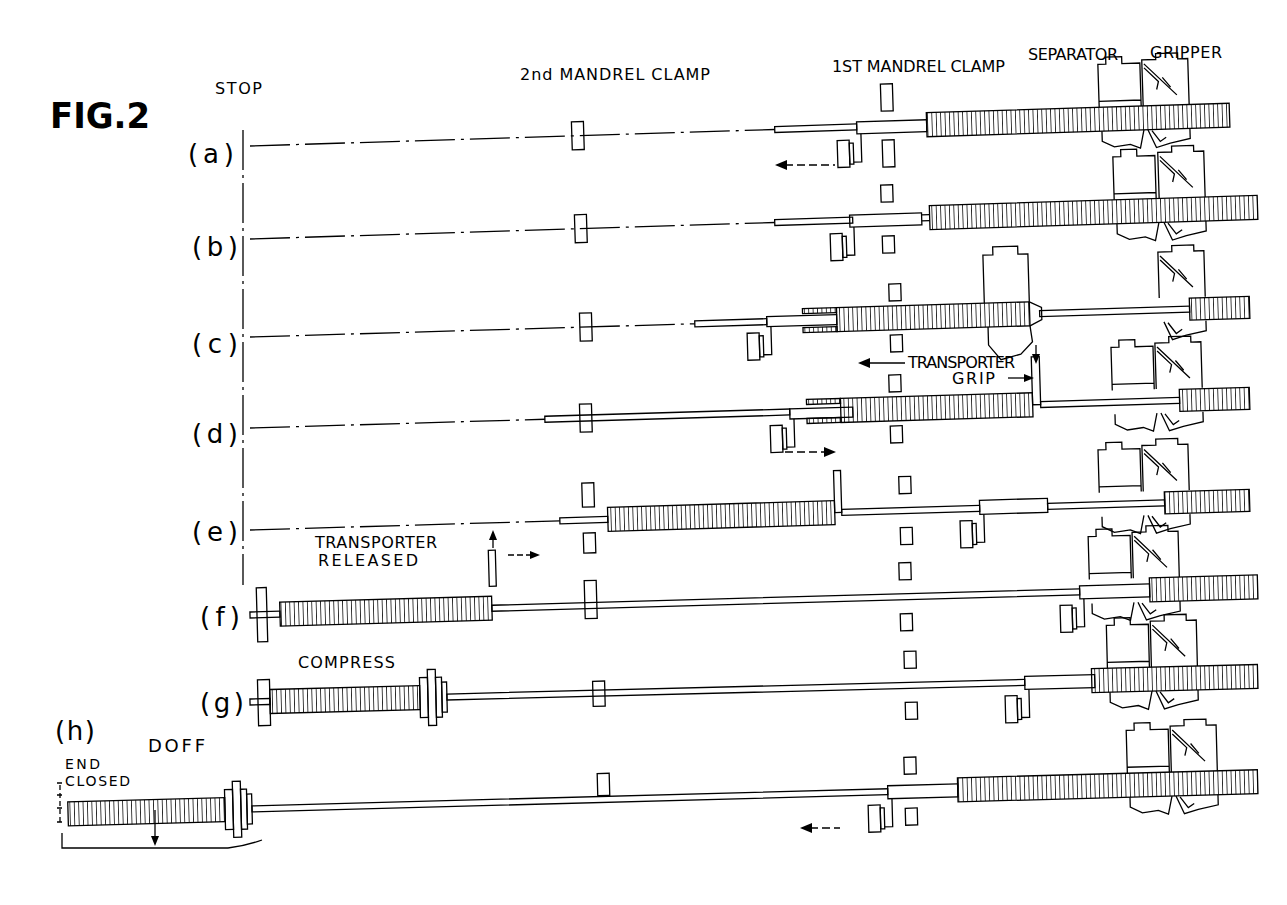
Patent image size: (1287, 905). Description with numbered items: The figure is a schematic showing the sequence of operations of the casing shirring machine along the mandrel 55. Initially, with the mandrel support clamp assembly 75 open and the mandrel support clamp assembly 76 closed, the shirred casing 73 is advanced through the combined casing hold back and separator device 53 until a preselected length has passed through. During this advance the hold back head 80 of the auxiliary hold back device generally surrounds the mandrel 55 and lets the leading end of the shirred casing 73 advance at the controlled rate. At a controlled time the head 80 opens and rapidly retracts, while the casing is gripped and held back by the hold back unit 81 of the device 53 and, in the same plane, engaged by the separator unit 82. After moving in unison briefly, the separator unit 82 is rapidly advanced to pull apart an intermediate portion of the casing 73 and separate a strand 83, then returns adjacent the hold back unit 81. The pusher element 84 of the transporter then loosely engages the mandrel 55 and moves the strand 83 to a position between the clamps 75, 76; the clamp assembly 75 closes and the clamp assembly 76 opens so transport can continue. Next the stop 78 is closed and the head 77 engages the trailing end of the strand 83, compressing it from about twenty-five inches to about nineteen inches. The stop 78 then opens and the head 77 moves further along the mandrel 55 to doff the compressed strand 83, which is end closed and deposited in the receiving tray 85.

The combined casing hold back and separator device 53 is at (1106, 72).
The mandrel 55 is at (784, 117).
The shirred casing 73 is at (1046, 128).
The mandrel support clamp assembly 75 is at (898, 104).
The mandrel support clamp assembly 76 is at (586, 118).
The head 77 is at (434, 728).
The stop 78 is at (276, 722).
The hold back head 80 is at (860, 113).
The hold back unit 81 is at (1202, 192).
The separator unit 82 is at (1114, 173).
The strand 83 is at (918, 300).
The pusher element 84 is at (1044, 385).
The receiving tray 85 is at (262, 840).